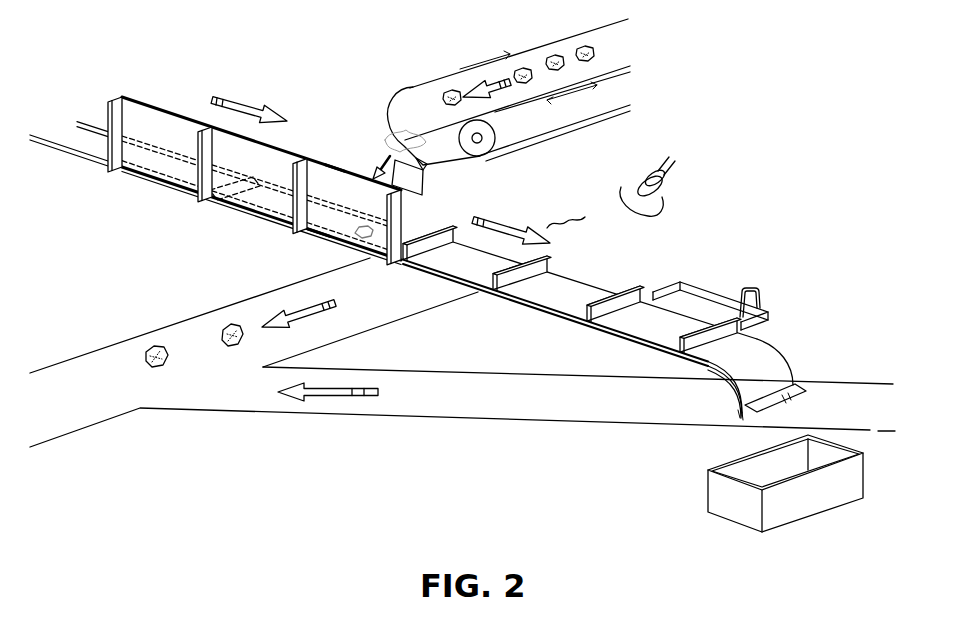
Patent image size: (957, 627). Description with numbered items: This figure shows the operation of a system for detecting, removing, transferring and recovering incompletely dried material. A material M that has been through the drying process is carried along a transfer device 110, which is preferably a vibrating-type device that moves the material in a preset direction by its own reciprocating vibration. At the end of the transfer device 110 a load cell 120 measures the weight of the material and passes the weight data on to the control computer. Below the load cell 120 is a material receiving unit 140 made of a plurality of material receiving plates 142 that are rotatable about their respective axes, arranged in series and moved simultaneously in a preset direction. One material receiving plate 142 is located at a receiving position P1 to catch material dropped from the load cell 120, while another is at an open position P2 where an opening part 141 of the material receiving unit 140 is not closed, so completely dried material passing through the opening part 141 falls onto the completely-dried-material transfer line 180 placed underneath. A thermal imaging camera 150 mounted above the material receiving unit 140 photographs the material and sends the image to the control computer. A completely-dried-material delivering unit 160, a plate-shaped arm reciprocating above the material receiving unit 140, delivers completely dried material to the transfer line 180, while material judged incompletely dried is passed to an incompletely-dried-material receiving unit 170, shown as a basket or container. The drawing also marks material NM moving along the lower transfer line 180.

The transfer device 110 is at (513, 128).
The material M is at (447, 96).
The load cell 120 is at (395, 175).
The material receiving unit 140 is at (82, 138).
The opening part 141 is at (405, 241).
The material receiving plate 142 is at (160, 137).
The receiving position P1 is at (317, 240).
The open position P2 is at (336, 170).
The thermal imaging camera 150 is at (662, 195).
The completely-dried-material delivering unit 160 is at (714, 293).
The incompletely-dried-material receiving unit 170 is at (730, 498).
The completely-dried-material transfer line 180 is at (441, 390).
The non-magnetic material NM is at (231, 331).